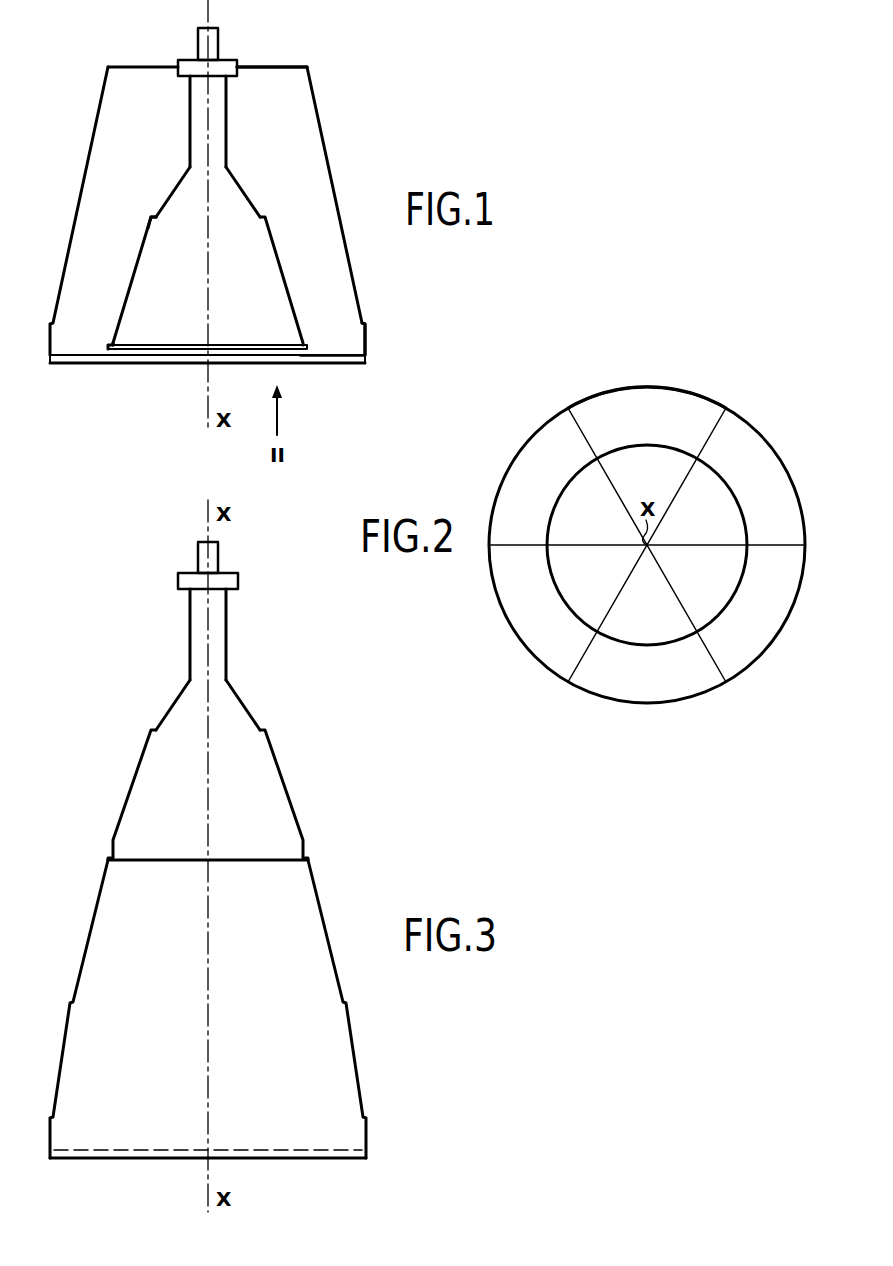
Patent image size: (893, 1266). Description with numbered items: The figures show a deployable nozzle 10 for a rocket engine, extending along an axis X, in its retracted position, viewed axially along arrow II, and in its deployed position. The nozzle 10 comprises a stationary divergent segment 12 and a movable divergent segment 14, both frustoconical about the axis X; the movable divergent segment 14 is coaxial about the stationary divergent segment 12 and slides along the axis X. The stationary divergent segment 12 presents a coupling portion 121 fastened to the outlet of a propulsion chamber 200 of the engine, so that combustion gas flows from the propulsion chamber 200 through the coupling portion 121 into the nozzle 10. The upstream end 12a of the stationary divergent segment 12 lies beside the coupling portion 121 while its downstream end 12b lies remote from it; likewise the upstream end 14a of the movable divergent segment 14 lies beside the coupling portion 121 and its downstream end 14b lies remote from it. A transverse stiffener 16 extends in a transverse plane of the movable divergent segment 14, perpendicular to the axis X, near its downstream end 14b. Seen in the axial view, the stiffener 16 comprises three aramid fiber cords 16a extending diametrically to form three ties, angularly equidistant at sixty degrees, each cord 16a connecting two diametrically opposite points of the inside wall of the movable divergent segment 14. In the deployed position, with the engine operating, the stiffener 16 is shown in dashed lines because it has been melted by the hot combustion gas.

In FIG. 1, the deployable nozzle 10 is at (80, 74).
In FIG. 2, the deployable nozzle 10 is at (588, 374).
In FIG. 3, the deployable nozzle 10 is at (104, 674).
In FIG. 1, the stationary divergent segment 12 is at (267, 240).
In FIG. 2, the stationary divergent segment 12 is at (648, 646).
In FIG. 3, the stationary divergent segment 12 is at (280, 783).
In FIG. 1, the upstream end 12a is at (150, 232).
In FIG. 1, the downstream end 12b is at (108, 344).
In FIG. 1, the coupling portion 121 is at (176, 196).
In FIG. 3, the coupling portion 121 is at (246, 708).
In FIG. 1, the movable divergent segment 14 is at (325, 128).
In FIG. 2, the movable divergent segment 14 is at (746, 421).
In FIG. 3, the movable divergent segment 14 is at (322, 920).
In FIG. 1, the upstream end 14a is at (309, 66).
In FIG. 1, the downstream end 14b is at (369, 362).
In FIG. 1, the transverse stiffener 16 is at (120, 362).
In FIG. 2, the transverse stiffener 16 is at (618, 552).
In FIG. 3, the transverse stiffener 16 is at (130, 1158).
In FIG. 1, the aramid fiber cords 16a is at (334, 355).
In FIG. 2, the aramid fiber cords 16a is at (707, 442).
In FIG. 1, the propulsion chamber 200 is at (228, 130).
In FIG. 3, the propulsion chamber 200 is at (228, 636).